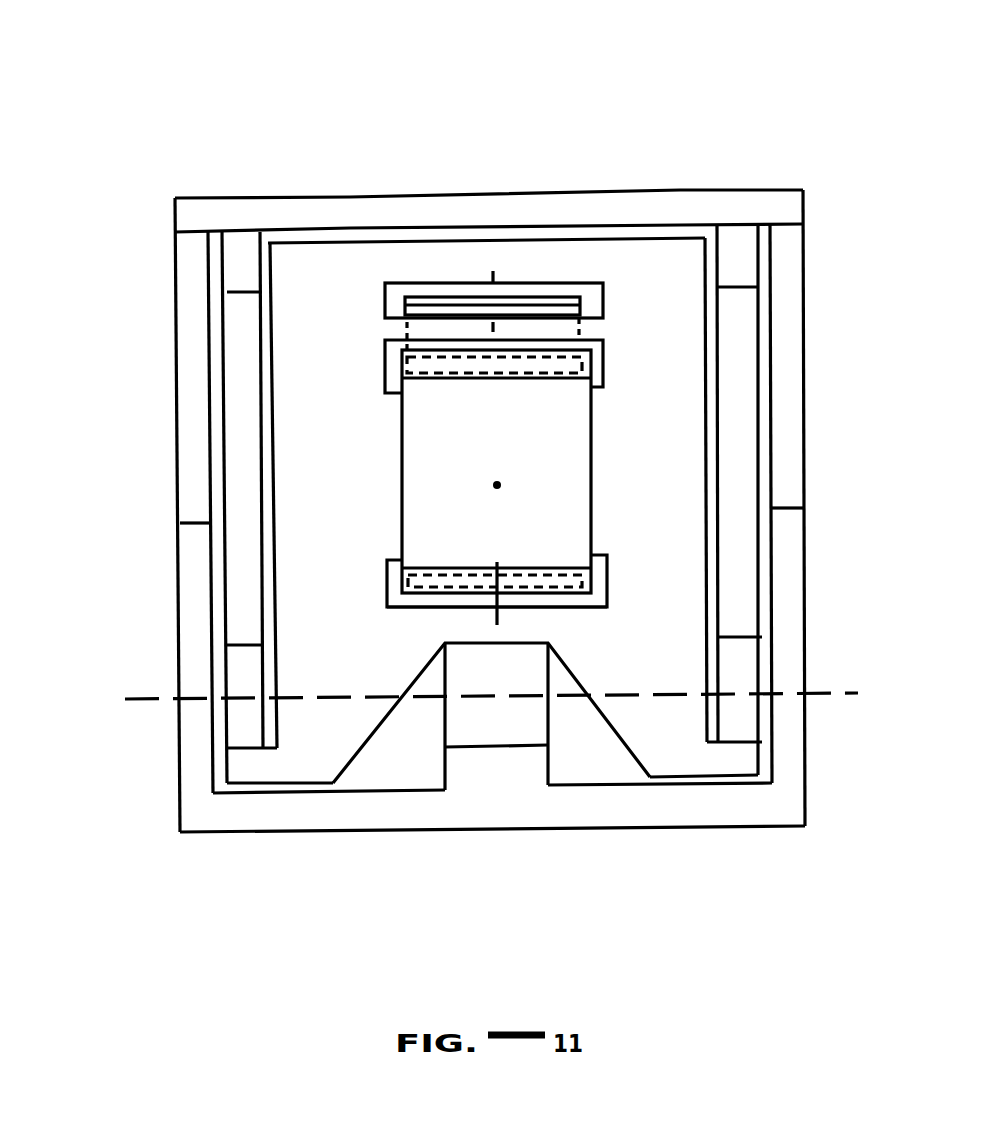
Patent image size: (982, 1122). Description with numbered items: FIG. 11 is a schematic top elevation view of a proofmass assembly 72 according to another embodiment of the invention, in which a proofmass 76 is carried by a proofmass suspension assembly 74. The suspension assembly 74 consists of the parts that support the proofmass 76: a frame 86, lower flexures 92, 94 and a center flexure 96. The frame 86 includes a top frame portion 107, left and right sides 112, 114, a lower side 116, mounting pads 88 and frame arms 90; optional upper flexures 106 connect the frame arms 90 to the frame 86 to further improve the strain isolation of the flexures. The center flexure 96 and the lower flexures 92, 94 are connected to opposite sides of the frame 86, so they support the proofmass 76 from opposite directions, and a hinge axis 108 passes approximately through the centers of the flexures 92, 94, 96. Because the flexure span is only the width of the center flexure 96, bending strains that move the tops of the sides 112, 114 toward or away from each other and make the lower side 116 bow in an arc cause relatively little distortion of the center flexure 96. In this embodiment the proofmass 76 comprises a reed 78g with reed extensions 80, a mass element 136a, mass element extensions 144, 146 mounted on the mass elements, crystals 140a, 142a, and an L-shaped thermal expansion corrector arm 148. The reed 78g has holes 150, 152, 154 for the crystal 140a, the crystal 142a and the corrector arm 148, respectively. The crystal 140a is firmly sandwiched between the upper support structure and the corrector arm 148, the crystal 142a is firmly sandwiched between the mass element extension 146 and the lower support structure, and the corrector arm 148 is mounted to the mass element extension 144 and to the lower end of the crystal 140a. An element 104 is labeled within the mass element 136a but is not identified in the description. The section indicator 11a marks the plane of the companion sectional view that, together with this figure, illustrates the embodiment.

The proofmass assembly 72 is at (218, 43).
The proofmass suspension assembly 74 is at (202, 108).
The proofmass 76 is at (179, 168).
The frame 86 is at (641, 152).
The top frame portion 107 is at (426, 203).
The mounting pads 88 is at (185, 333).
The frame arms 90 is at (240, 405).
The upper flexures 106 is at (228, 263).
The reed 78g is at (280, 465).
The left side of frame 112 is at (193, 572).
The right side of frame 114 is at (793, 583).
The lower flexure 92 is at (235, 663).
The lower flexure 94 is at (753, 667).
The hinge axis 108 is at (143, 698).
The center flexure 96 is at (537, 727).
The reed extensions 80 is at (250, 770).
The lower side of frame 116 is at (643, 822).
The sensor body 104 is at (495, 487).
The mass element 136a is at (580, 510).
The crystal 140a is at (506, 310).
The L-shaped thermal expansion corrector arm 148 is at (568, 295).
The hole 150 is at (603, 298).
The mass element extension 146 is at (579, 326).
The mass element extension 144 is at (603, 360).
The hole 154 is at (603, 381).
The hole 152 is at (607, 600).
The crystal 142a is at (568, 610).
The section view indicator 11a is at (493, 271).